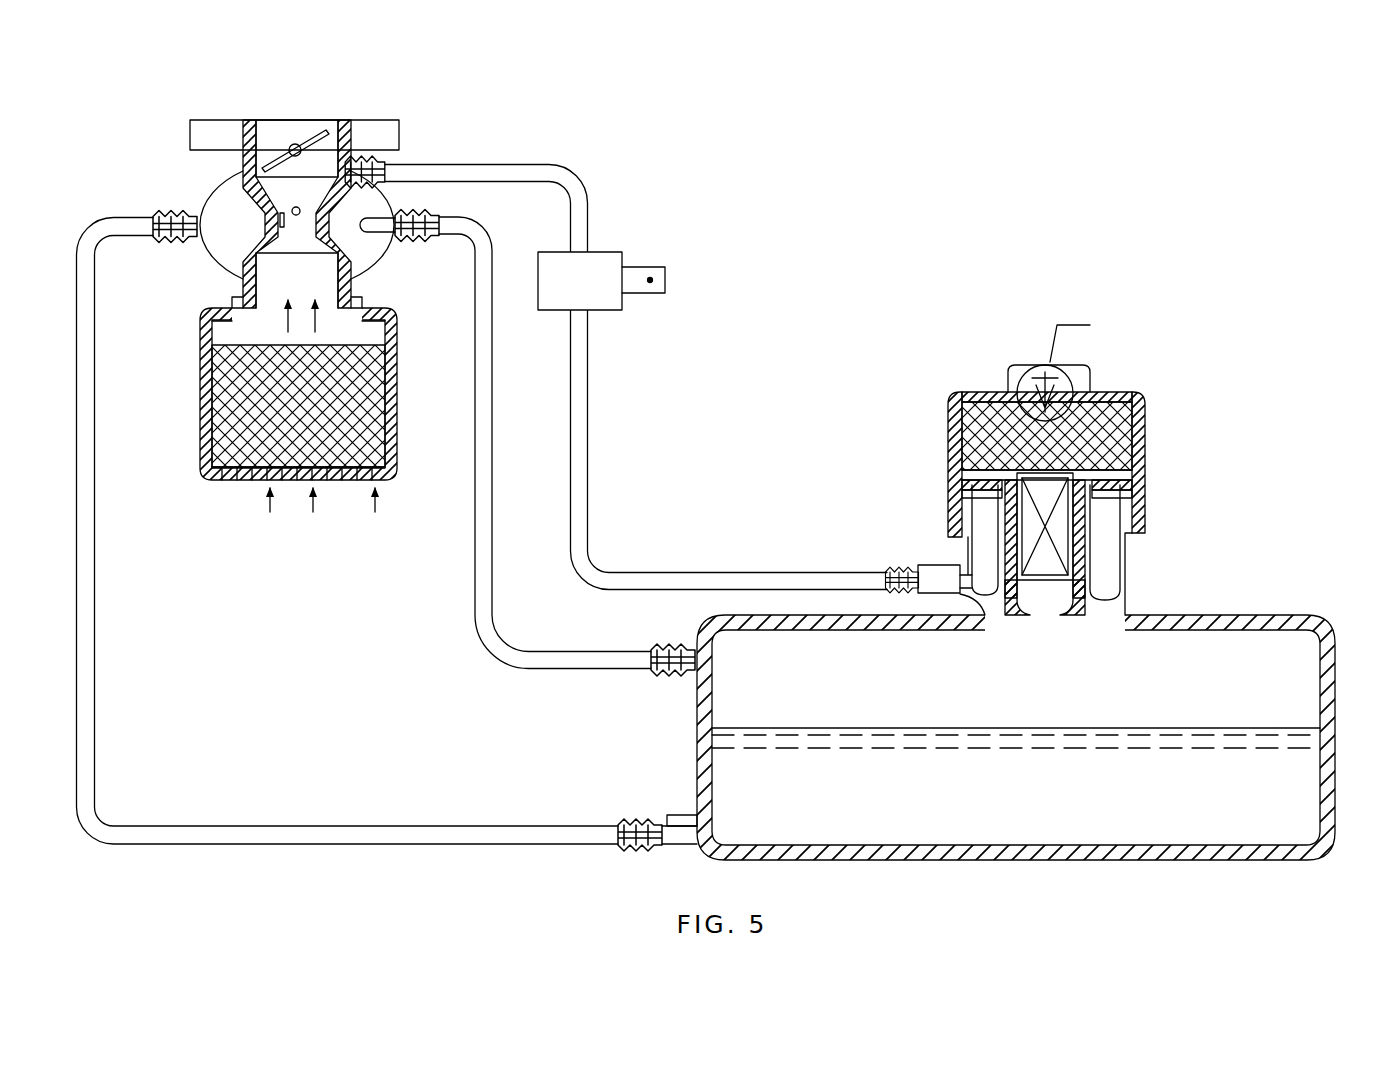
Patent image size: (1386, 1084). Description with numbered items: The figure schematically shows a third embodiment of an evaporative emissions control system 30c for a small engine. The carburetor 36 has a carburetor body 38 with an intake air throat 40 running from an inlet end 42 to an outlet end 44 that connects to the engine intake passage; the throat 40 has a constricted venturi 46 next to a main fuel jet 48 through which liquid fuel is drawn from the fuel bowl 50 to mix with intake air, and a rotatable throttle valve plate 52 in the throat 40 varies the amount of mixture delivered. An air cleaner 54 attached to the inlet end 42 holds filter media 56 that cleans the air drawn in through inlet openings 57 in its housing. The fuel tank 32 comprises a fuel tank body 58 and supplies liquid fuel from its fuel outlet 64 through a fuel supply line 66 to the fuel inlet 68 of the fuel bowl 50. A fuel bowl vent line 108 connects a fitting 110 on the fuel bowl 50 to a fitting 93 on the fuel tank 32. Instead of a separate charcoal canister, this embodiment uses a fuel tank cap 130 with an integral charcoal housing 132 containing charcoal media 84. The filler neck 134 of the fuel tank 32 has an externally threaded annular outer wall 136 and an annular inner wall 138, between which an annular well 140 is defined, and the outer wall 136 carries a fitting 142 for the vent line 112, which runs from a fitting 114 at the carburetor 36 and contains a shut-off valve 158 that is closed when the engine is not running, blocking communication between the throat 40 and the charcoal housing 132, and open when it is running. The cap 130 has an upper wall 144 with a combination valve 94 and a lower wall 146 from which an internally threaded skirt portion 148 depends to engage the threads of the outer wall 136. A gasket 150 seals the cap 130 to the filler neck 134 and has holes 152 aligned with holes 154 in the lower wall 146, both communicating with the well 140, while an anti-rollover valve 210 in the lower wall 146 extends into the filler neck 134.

The evaporative emissions control system 30c is at (927, 146).
The fuel tank 32 is at (1340, 644).
The carburetor 36 is at (412, 116).
The carburetor body 38 is at (213, 137).
The throat 40 is at (262, 128).
The inlet end 42 is at (264, 320).
The outlet end 44 is at (287, 116).
The venturi 46 is at (279, 224).
The main fuel jet 48 is at (294, 216).
The fuel bowl 50 is at (215, 224).
The throttle valve plate 52 is at (315, 137).
The air cleaner 54 is at (203, 380).
The filter media 56 is at (240, 408).
The inlet openings 57 is at (223, 482).
The fuel tank body 58 is at (697, 703).
The fuel outlet 64 is at (643, 849).
The fuel supply line 66 is at (95, 548).
The fuel inlet 68 is at (181, 212).
The charcoal media 84 is at (1100, 410).
The fitting 93 is at (660, 670).
The combination valve 94 is at (1040, 385).
The fuel bowl vent line 108 is at (478, 632).
The fitting 110 is at (424, 218).
The vent line 112 is at (555, 165).
The vent fitting 114 is at (372, 165).
The fuel tank cap 130 is at (1162, 404).
The charcoal housing 132 is at (1140, 428).
The filler neck 134 is at (1130, 590).
The annular outer wall 136 is at (1110, 573).
The annular inner wall 138 is at (1110, 555).
The annular well 140 is at (1122, 545).
The fitting 142 is at (930, 565).
The upper wall 144 is at (975, 385).
The lower wall 146 is at (955, 405).
The skirt portion 148 is at (1145, 498).
The gasket 150 is at (1135, 477).
The holes 152 is at (950, 492).
The holes 154 is at (965, 460).
The shut-off valve 158 is at (562, 295).
The anti-rollover valve 210 is at (1052, 585).